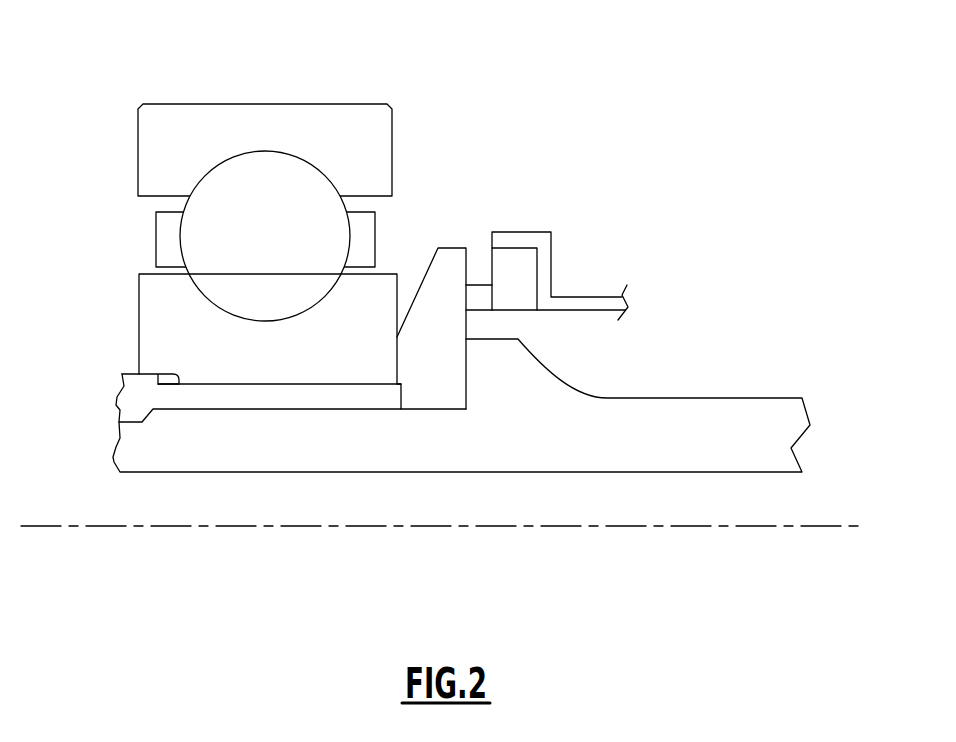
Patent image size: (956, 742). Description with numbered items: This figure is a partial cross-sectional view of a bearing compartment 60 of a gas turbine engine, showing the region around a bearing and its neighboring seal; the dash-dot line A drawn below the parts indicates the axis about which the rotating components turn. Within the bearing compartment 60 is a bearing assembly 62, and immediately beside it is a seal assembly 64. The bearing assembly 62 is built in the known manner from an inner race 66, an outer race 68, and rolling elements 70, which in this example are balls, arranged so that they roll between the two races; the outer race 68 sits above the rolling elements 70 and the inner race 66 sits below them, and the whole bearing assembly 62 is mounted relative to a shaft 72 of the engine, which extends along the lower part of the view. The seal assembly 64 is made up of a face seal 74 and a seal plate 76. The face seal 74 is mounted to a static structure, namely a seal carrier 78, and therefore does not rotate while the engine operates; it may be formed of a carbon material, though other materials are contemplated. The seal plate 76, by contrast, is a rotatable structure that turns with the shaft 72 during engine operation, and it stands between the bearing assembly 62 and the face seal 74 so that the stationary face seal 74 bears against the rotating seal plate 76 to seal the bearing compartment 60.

The bearing compartment 60 is at (104, 176).
The bearing assembly 62 is at (137, 219).
The seal assembly 64 is at (413, 258).
The inner race 66 is at (250, 371).
The outer race 68 is at (250, 141).
The rolling elements 70 is at (250, 241).
The shaft 72 is at (569, 456).
The face seal 74 is at (499, 296).
The seal plate 76 is at (422, 344).
The seal carrier 78 is at (525, 242).
The axis A is at (843, 526).